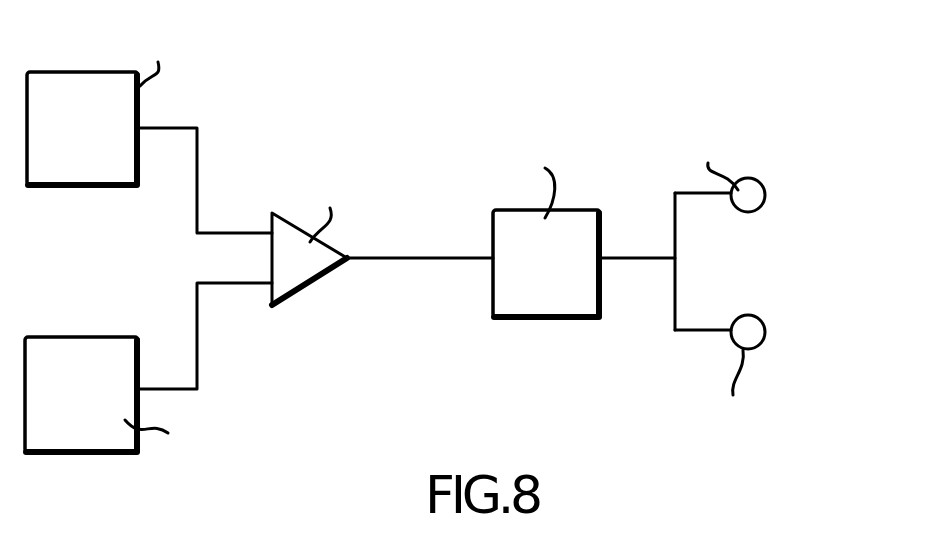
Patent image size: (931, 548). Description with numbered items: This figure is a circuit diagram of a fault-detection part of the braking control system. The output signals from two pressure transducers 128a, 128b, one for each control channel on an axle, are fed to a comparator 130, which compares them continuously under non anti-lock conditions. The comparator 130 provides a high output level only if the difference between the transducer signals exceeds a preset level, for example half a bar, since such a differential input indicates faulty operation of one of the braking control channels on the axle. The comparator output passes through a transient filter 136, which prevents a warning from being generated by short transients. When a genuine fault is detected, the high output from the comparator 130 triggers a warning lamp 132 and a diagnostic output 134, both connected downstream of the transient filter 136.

The pressure transducer 128a is at (83, 183).
The pressure transducer 128b is at (93, 441).
The comparator 130 is at (313, 277).
The warning lamp 132 is at (757, 205).
The diagnostic output 134 is at (757, 337).
The transient filter 136 is at (582, 307).